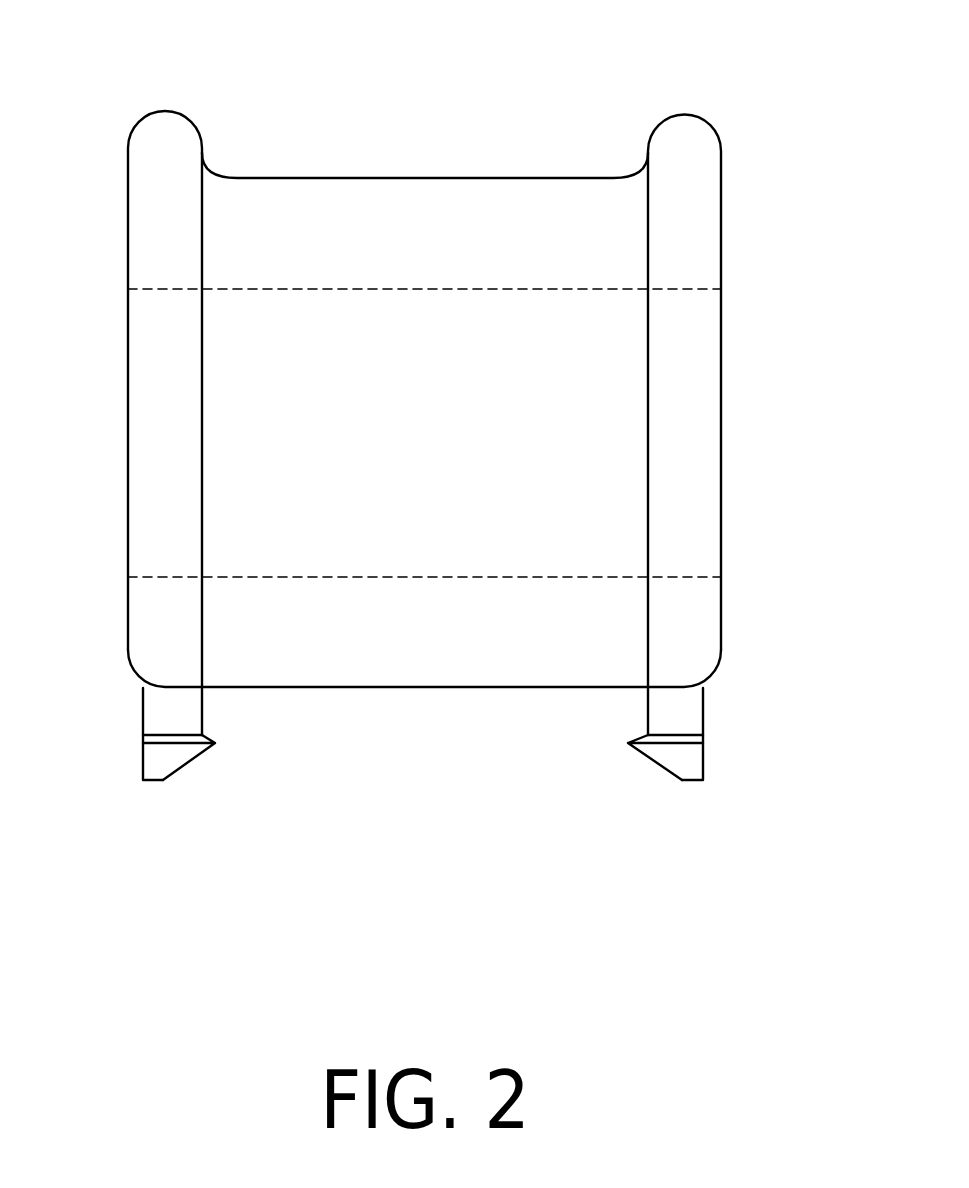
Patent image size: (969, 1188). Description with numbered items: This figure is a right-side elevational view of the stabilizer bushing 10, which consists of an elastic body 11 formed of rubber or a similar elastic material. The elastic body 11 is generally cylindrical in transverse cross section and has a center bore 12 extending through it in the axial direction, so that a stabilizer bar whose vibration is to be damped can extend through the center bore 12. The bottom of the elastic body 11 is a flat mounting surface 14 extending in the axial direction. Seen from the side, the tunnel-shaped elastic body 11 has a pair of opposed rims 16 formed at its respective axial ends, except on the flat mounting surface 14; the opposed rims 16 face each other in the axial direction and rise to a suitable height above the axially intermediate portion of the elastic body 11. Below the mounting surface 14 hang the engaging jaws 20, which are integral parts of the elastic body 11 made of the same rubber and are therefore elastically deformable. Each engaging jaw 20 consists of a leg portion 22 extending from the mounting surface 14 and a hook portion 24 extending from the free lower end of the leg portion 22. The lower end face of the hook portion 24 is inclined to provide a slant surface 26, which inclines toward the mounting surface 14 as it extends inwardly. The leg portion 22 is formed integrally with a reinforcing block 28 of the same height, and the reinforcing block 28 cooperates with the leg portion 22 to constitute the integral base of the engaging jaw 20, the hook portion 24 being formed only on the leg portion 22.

The stabilizer bushing 10 is at (800, 160).
The elastic body 11 is at (392, 225).
The center bore 12 is at (545, 290).
The flat mounting surface 14 is at (445, 688).
The opposed rims 16 is at (165, 138).
The engaging jaw 20 is at (157, 800).
The leg portion 22 is at (421, 710).
The hook portion 24 is at (148, 754).
The slant surface 26 is at (191, 761).
The reinforcing block 28 is at (155, 709).